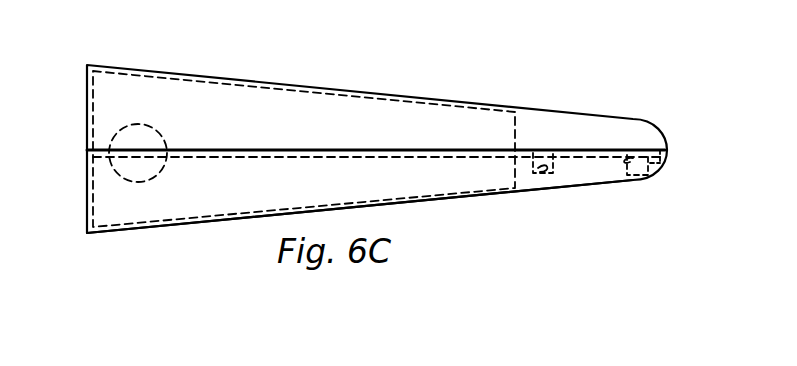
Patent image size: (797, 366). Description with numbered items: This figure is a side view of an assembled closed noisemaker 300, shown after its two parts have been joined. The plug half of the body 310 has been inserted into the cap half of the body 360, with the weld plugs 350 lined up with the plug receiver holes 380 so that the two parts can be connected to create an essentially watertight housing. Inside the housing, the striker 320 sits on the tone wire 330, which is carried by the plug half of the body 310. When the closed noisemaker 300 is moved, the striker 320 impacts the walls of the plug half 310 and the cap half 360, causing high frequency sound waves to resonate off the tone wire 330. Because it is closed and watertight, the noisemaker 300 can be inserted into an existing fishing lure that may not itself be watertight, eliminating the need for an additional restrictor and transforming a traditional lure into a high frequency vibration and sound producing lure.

The closed noisemaker 300 is at (598, 65).
The plug half of the body 310 is at (468, 102).
The striker 320 is at (135, 138).
The tone wire 330 is at (248, 155).
The weld plugs 350 is at (640, 176).
The cap half of the body 360 is at (142, 232).
The plug receiver holes 380 is at (630, 162).